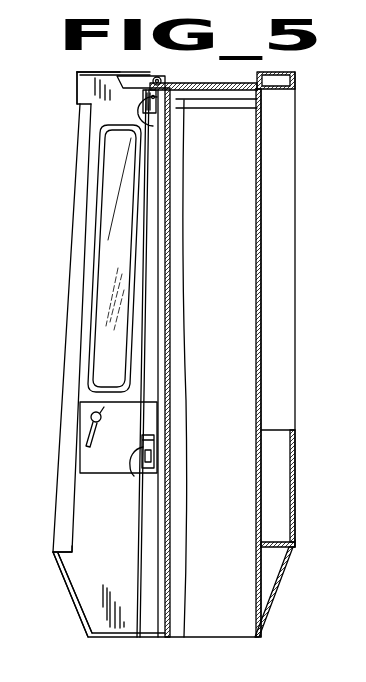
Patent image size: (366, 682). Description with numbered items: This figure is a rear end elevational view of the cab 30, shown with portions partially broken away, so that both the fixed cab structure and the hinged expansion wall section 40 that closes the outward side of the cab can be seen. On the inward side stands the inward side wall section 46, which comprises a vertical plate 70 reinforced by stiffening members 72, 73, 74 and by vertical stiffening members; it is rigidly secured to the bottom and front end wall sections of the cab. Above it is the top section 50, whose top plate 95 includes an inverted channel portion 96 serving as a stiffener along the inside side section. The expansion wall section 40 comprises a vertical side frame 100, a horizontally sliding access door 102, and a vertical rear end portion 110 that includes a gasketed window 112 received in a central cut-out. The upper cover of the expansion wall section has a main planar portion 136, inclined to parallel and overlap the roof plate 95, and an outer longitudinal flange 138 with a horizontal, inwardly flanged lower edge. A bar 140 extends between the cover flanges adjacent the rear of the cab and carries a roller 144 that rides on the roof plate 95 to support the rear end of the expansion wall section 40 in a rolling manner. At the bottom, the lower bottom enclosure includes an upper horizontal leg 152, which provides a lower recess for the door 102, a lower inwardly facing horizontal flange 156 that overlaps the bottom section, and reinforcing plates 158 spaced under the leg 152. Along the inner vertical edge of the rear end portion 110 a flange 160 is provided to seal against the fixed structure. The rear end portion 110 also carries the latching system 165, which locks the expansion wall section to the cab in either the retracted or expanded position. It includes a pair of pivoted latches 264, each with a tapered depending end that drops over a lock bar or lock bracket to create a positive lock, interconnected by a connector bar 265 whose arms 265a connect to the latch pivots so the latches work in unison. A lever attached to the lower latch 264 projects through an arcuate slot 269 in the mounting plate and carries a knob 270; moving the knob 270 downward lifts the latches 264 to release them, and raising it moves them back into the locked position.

The cab 30 is at (52, 573).
The expansion wall section 40 is at (76, 165).
The inward side wall section 46 is at (298, 221).
The top section 50 is at (240, 79).
The vertical plate 70 is at (259, 132).
The stiffening member 72 is at (294, 451).
The stiffening member 73 is at (275, 475).
The stiffening member 74 is at (271, 543).
The top plate 95 is at (186, 88).
The inverted channel portion 96 is at (298, 78).
The vertical side frame 100 is at (95, 522).
The horizontally sliding access door 102 is at (74, 187).
The vertical rear end portion 110 is at (82, 500).
The window 112 is at (120, 212).
The main planar portion 136 is at (78, 74).
The longitudinal flange 138 is at (77, 85).
The bar 140 is at (133, 68).
The roller 144 is at (158, 77).
The upper horizontal leg 152 is at (62, 552).
The lower inwardly facing horizontal flange 156 is at (96, 637).
The reinforcing plates 158 is at (80, 618).
The flange 160 is at (107, 128).
The latching system 165 is at (173, 191).
The pivoted latch 264 is at (143, 96).
The connector bar 265 is at (185, 219).
The arms 265a is at (153, 127).
The arcuate slot 269 is at (88, 438).
The knob 270 is at (91, 418).